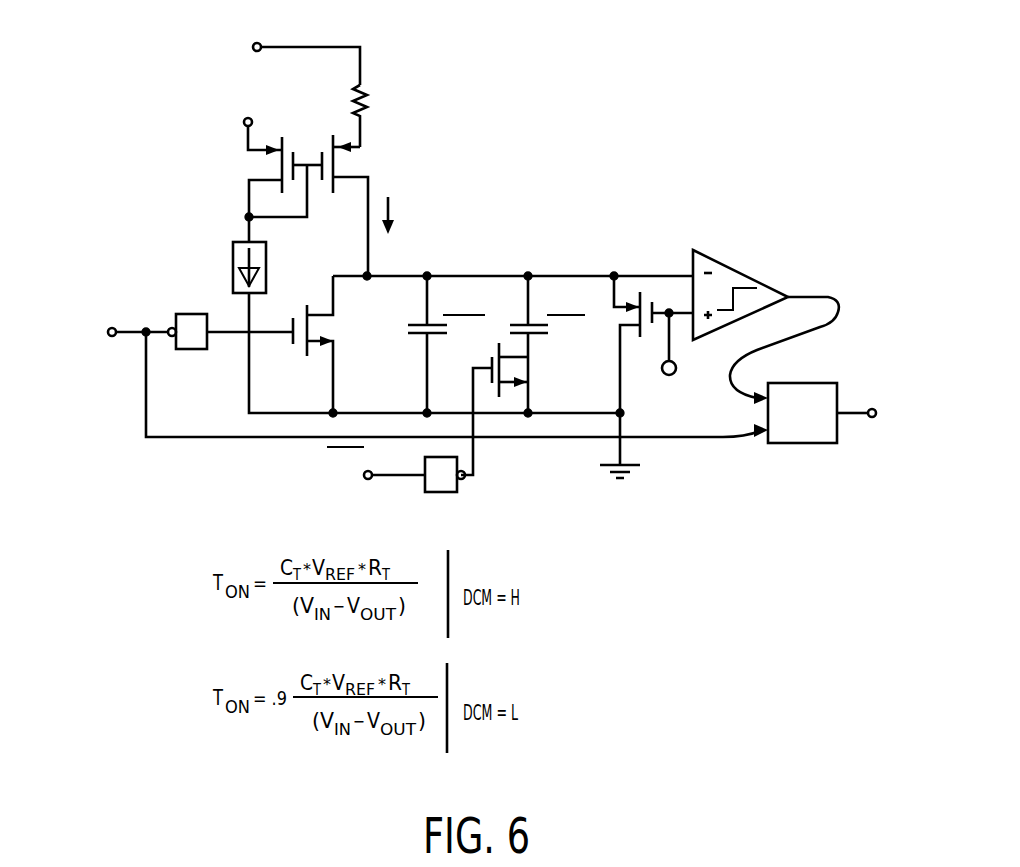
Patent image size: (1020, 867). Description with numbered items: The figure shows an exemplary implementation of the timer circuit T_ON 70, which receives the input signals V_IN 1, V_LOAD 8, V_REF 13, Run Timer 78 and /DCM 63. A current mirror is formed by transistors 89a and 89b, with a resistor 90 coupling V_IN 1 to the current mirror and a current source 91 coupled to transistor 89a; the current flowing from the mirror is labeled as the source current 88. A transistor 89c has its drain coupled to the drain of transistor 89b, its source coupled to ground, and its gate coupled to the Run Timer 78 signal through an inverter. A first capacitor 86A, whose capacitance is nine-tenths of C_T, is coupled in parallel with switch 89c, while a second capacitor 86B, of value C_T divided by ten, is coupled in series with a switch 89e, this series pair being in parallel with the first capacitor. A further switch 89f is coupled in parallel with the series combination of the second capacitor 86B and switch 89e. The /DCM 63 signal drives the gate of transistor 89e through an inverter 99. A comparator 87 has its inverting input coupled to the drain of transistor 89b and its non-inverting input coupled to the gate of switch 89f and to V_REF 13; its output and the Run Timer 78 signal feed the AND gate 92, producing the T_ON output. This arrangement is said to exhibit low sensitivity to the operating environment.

The V_IN input signal 1 is at (301, 42).
The V_LOAD input signal 8 is at (254, 111).
The V_REF input signal 13 is at (699, 372).
The /DCM input signal 63 is at (405, 478).
The timer circuit T_ON 70 is at (605, 111).
The Run Timer input signal 78 is at (147, 328).
The first capacitor 86A is at (415, 334).
The second capacitor 86B is at (543, 338).
The comparator 87 is at (737, 268).
The source current ISOURCE 88 is at (389, 204).
The transistor 89a is at (248, 170).
The transistor 89b is at (357, 163).
The transistor 89c is at (333, 327).
The switch 89e is at (527, 370).
The switch 89f is at (650, 288).
The resistor 90 is at (420, 80).
The current source 91 is at (198, 248).
The AND gate 92 is at (802, 444).
The inverter 99 is at (457, 487).